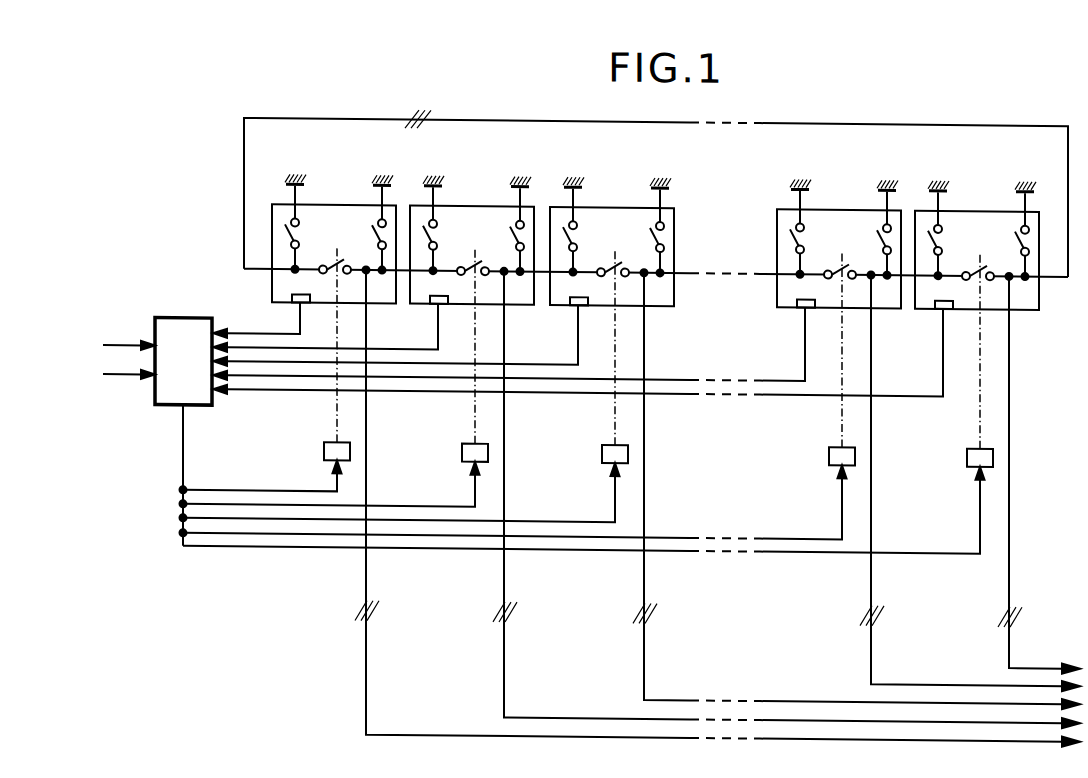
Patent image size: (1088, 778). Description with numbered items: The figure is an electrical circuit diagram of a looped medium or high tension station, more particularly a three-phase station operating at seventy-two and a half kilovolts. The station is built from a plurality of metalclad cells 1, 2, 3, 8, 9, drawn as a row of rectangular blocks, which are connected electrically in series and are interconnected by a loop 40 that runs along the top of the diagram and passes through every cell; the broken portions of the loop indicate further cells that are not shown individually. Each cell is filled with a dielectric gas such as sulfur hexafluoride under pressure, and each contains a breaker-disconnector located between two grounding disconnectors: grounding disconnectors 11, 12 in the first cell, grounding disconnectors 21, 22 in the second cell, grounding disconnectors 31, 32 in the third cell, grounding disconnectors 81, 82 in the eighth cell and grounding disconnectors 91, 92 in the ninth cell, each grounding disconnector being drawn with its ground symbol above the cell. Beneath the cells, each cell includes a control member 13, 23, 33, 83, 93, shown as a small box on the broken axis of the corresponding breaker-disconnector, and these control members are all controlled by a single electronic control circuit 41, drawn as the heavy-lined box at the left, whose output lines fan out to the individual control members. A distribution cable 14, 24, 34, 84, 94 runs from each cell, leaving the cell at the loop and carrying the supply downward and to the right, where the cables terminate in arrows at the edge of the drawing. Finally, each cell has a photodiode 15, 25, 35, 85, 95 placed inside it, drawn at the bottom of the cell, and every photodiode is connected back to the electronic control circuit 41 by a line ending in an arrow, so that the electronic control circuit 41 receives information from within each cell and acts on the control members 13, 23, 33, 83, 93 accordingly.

The loop 40 is at (356, 114).
The electronic control circuit 41 is at (183, 331).
The metalclad cell 1 is at (377, 300).
The metalclad cell 2 is at (515, 300).
The metalclad cell 3 is at (655, 300).
The metalclad cell 8 is at (882, 300).
The metalclad cell 9 is at (1020, 300).
The grounding disconnector 11 is at (298, 226).
The grounding disconnector 12 is at (373, 230).
The control member 13 is at (324, 448).
The distribution cable 14 is at (366, 645).
The photodiode 15 is at (305, 292).
The grounding disconnector 21 is at (436, 226).
The grounding disconnector 22 is at (511, 230).
The control member 23 is at (462, 448).
The distribution cable 24 is at (504, 645).
The photodiode 25 is at (443, 292).
The grounding disconnector 31 is at (576, 226).
The grounding disconnector 32 is at (651, 230).
The control member 33 is at (602, 448).
The distribution cable 34 is at (644, 645).
The photodiode 35 is at (583, 292).
The grounding disconnector 81 is at (803, 226).
The grounding disconnector 82 is at (878, 230).
The control member 83 is at (829, 448).
The distribution cable 84 is at (871, 645).
The photodiode 85 is at (810, 292).
The grounding disconnector 91 is at (941, 226).
The grounding disconnector 92 is at (1016, 230).
The control member 93 is at (967, 448).
The distribution cable 94 is at (1009, 645).
The photodiode 95 is at (948, 292).